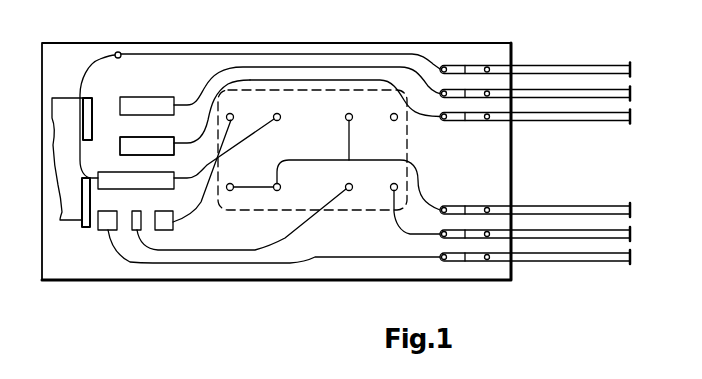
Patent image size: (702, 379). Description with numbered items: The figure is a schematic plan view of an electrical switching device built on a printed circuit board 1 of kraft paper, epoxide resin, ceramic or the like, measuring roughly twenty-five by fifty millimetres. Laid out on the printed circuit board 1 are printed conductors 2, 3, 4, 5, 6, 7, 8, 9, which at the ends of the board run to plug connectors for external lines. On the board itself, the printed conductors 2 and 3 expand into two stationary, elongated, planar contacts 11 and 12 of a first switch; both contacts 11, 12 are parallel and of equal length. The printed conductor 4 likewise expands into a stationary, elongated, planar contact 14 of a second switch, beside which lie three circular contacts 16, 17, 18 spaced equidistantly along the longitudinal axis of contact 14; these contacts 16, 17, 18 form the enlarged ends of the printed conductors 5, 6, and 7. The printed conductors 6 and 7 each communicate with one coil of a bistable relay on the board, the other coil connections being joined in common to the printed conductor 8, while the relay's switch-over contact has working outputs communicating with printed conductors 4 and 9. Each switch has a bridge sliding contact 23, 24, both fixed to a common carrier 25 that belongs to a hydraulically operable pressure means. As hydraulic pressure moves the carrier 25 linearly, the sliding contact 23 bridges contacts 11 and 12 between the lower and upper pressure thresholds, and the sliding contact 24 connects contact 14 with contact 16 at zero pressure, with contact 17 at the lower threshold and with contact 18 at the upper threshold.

The printed circuit board 1 is at (444, 49).
The printed conductor 2 is at (399, 66).
The printed conductor 3 is at (432, 121).
The printed conductor 4 is at (80, 76).
The printed conductor 5 is at (115, 246).
The printed conductor 6 is at (254, 131).
The printed conductor 7 is at (236, 250).
The printed conductor 8 is at (420, 193).
The printed conductor 9 is at (396, 228).
The contact 11 is at (145, 97).
The contact 12 is at (120, 143).
The contact 14 is at (125, 185).
The contact 16 is at (105, 230).
The contact 17 is at (140, 230).
The contact 18 is at (173, 225).
The sliding contact 23 is at (87, 97).
The sliding contact 24 is at (82, 193).
The carrier 25 is at (63, 143).